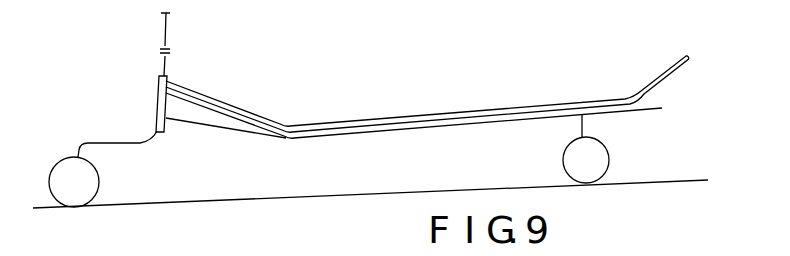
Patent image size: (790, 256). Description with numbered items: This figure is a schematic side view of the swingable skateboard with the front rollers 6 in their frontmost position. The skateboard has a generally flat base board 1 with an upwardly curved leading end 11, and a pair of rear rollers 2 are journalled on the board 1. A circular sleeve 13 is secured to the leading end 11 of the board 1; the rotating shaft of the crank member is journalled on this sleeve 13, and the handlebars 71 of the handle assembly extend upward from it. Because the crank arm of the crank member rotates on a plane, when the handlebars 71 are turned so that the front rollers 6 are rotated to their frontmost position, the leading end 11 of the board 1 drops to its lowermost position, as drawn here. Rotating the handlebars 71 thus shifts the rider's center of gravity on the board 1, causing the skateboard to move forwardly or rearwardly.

The base board 1 is at (380, 120).
The leading end 11 is at (240, 107).
The circular sleeve 13 is at (158, 82).
The handlebars 71 is at (163, 14).
The front rollers 6 is at (68, 173).
The rear rollers 2 is at (598, 150).